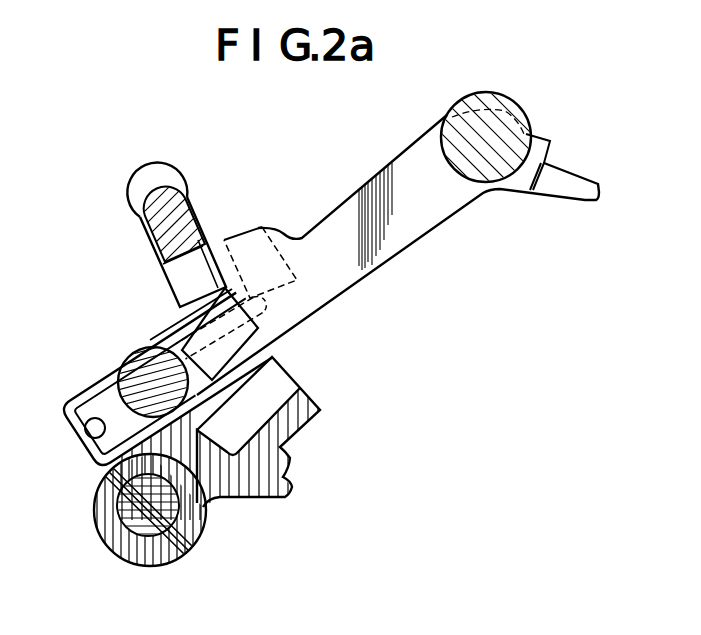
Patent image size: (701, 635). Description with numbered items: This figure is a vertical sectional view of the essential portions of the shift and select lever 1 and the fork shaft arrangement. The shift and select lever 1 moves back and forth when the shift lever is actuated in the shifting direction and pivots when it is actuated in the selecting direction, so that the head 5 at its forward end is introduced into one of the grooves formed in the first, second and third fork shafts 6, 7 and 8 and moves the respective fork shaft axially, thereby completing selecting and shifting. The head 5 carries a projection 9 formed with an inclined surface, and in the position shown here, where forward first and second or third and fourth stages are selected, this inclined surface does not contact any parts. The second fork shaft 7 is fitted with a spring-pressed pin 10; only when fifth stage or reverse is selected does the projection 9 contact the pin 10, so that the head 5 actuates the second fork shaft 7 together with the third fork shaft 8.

The shift and select lever 1 is at (510, 104).
The head 5 is at (374, 266).
The first fork shaft 6 is at (183, 179).
The second fork shaft 7 is at (130, 363).
The third fork shaft 8 is at (113, 525).
The projection 9 is at (258, 228).
The pin 10 is at (263, 337).